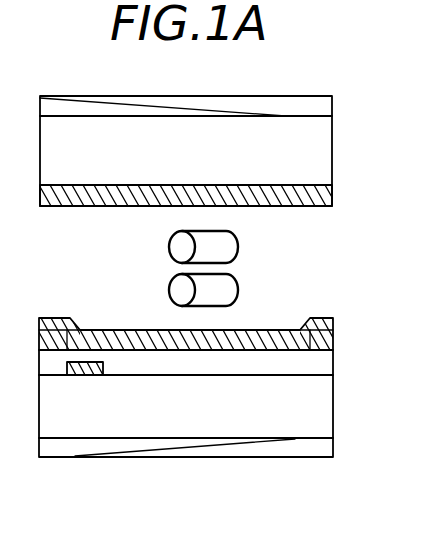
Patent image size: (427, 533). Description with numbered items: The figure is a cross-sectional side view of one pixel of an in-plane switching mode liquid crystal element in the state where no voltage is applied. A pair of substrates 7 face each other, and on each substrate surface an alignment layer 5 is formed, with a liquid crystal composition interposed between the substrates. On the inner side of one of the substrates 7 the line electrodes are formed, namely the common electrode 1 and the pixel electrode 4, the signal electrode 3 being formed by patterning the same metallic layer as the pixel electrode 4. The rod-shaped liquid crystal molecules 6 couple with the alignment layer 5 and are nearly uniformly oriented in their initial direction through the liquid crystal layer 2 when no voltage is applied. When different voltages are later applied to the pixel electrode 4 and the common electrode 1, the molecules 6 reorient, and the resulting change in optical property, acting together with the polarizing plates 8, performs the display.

The common electrode 1 is at (97, 366).
The gap layer 2 is at (251, 367).
The signal electrode 3 is at (42, 345).
The pixel electrode 4 is at (333, 345).
The alignment layer 5 is at (305, 318).
The liquid crystal molecules 6 is at (240, 250).
The substrate 7 is at (47, 167).
The polarizing plate 8 is at (74, 97).